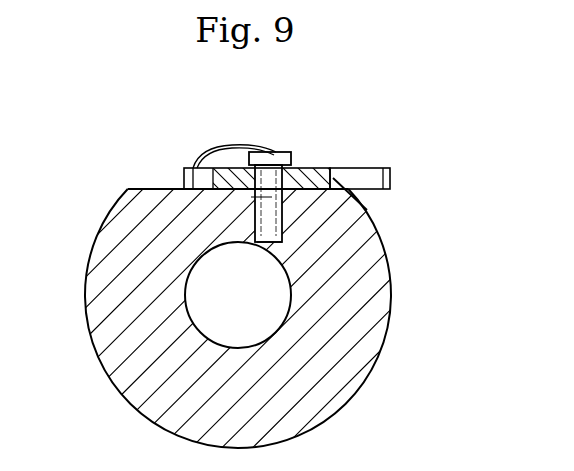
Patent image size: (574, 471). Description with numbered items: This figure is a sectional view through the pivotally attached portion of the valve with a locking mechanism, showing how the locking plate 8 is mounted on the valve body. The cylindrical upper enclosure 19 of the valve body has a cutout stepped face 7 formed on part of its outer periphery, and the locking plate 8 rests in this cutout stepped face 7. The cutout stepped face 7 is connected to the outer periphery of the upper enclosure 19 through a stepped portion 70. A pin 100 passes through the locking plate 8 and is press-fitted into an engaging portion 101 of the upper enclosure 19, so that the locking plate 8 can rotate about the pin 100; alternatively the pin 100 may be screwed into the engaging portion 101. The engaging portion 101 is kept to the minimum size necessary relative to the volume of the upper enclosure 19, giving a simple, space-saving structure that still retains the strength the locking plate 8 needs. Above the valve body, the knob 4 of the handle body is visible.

The knob 4 is at (220, 158).
The cutout stepped face 7 is at (168, 188).
The locking plate 8 is at (302, 170).
The upper enclosure 19 is at (377, 303).
The stepped portion 70 is at (328, 181).
The pin 100 is at (257, 197).
The engaging portion 101 is at (282, 225).